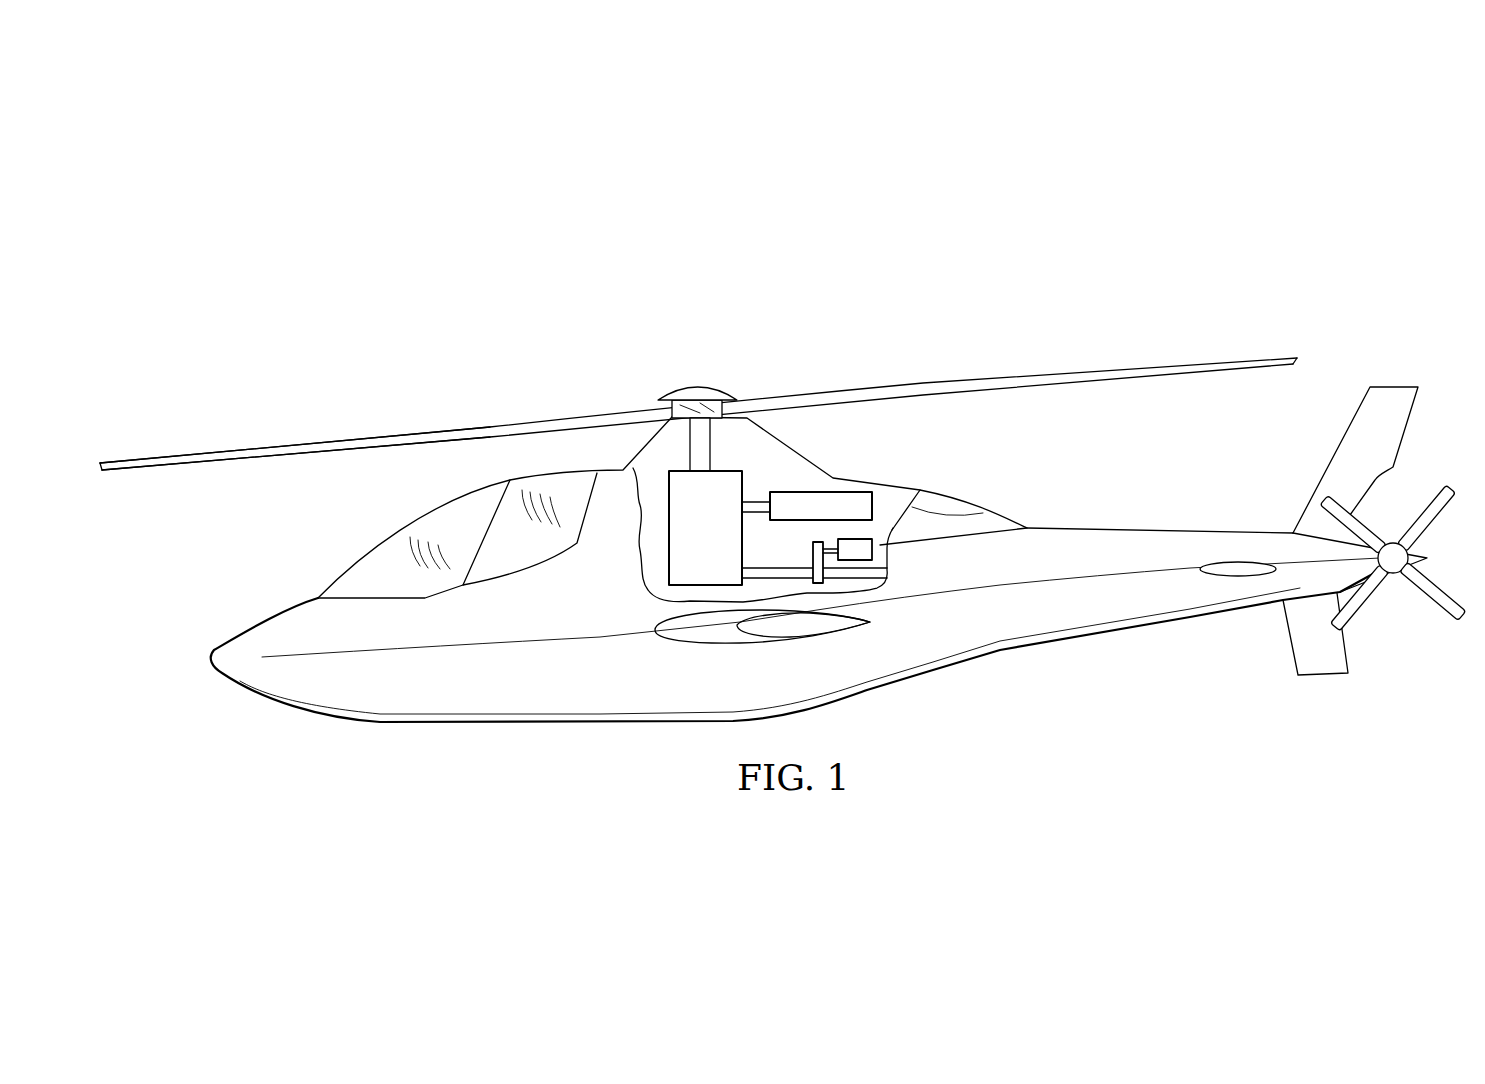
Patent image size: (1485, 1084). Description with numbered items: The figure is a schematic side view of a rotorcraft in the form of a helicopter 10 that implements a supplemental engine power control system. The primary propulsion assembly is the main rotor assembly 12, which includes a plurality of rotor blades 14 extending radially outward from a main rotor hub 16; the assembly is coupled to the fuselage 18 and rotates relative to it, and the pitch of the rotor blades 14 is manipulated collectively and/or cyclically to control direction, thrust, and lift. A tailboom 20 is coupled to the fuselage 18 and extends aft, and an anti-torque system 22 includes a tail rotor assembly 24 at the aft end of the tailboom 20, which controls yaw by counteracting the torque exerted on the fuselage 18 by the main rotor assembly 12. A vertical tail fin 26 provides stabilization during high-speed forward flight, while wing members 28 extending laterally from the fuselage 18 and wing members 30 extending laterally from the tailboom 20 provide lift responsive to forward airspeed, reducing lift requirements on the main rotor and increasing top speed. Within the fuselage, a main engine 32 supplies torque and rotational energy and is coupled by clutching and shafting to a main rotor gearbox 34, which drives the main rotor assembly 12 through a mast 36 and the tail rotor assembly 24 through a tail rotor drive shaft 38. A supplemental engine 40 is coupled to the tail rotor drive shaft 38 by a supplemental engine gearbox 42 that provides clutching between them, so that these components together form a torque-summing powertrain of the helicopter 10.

The helicopter 10 is at (1063, 275).
The main rotor assembly 12 is at (905, 384).
The rotor blades 14 is at (472, 427).
The main rotor hub 16 is at (706, 386).
The fuselage 18 is at (528, 700).
The tailboom 20 is at (1063, 618).
The anti-torque system 22 is at (1428, 490).
The tail rotor assembly 24 is at (1428, 605).
The vertical tail fin 26 is at (1390, 387).
The wing members 28 is at (732, 645).
The wing members 30 is at (1232, 562).
The main engine 32 is at (850, 492).
The main rotor gearbox 34 is at (722, 542).
The mast 36 is at (690, 458).
The tail rotor drive shaft 38 is at (867, 580).
The supplemental engine 40 is at (895, 538).
The supplemental engine gearbox 42 is at (813, 555).